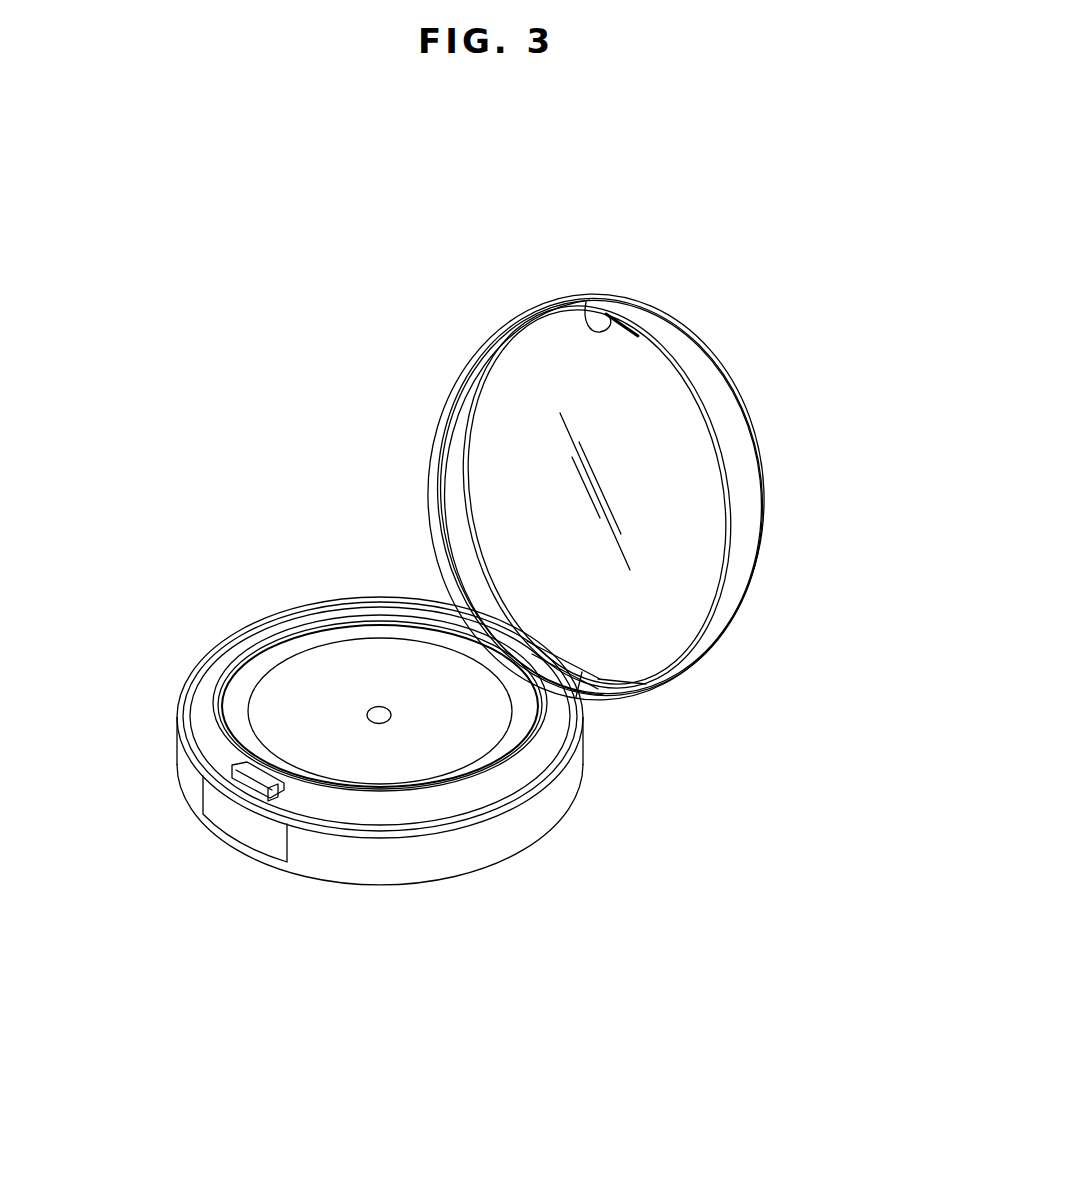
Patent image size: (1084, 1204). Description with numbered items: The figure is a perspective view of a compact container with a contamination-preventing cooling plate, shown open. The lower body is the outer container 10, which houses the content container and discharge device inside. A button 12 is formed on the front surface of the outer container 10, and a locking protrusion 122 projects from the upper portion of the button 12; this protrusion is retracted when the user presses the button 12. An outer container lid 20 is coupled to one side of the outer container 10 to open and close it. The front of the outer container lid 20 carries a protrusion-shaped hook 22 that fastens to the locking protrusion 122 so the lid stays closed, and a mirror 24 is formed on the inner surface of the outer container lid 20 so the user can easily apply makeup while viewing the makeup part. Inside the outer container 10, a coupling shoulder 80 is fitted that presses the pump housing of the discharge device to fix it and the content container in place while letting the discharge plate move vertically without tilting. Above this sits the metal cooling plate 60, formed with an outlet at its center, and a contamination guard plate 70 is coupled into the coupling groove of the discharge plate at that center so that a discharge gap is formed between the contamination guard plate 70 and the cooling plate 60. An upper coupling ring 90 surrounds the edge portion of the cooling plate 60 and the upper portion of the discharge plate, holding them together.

The outer container 10 is at (328, 873).
The button 12 is at (247, 826).
The locking protrusion 122 is at (242, 773).
The outer container lid 20 is at (748, 394).
The hook 22 is at (584, 300).
The mirror 24 is at (530, 352).
The cooling plate 60 is at (321, 675).
The contamination guard plate 70 is at (382, 716).
The coupling shoulder 80 is at (205, 743).
The upper coupling ring 90 is at (227, 704).